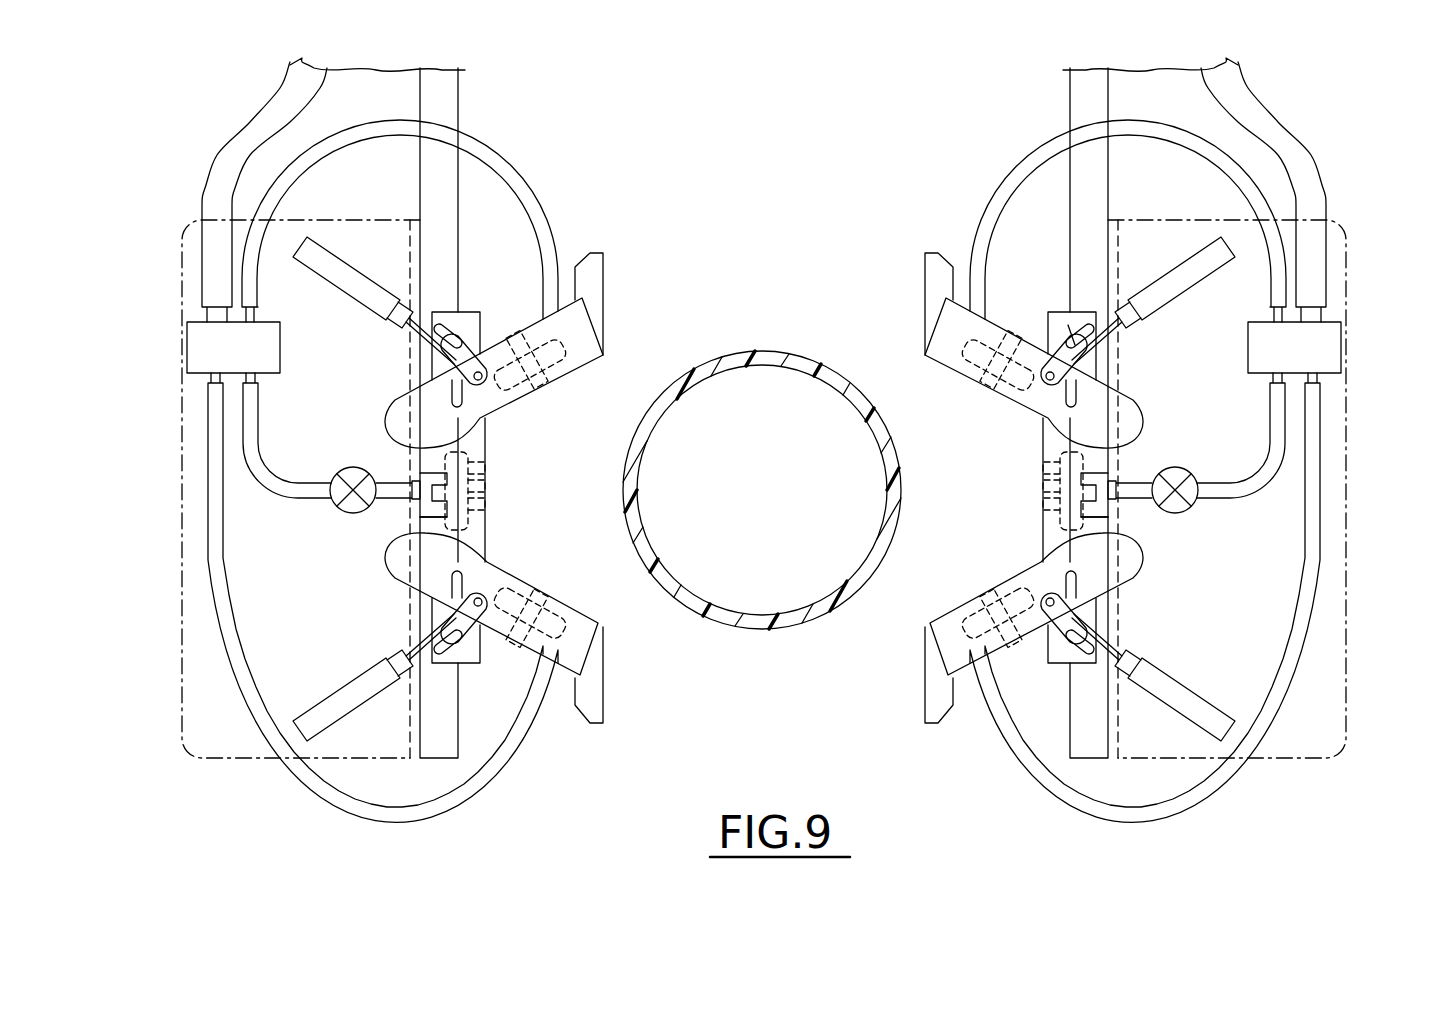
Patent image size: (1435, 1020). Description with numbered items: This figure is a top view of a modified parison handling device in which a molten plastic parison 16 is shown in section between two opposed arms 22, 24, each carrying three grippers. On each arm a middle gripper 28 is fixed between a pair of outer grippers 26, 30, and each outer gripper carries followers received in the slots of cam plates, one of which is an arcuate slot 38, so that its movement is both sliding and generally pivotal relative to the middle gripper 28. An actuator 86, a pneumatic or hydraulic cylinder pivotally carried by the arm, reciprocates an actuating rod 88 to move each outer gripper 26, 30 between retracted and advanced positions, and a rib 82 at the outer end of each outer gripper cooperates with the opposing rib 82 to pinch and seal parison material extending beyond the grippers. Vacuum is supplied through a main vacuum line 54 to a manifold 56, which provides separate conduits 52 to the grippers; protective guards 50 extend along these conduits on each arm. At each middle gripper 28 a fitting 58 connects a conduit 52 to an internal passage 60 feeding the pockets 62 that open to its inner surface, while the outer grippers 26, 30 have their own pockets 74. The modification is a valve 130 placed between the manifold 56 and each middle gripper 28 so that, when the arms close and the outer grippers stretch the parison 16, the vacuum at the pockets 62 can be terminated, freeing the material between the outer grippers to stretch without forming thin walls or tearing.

The parison 16 is at (767, 350).
The arm 22 is at (1077, 108).
The arm 24 is at (450, 105).
The outer gripper 26 is at (598, 335).
The middle gripper 28 is at (478, 437).
The outer gripper 30 is at (593, 628).
The arcuate slot 38 is at (1070, 337).
The protective guard 50 is at (180, 530).
The conduit 52 is at (267, 207).
The main vacuum line 54 is at (223, 153).
The manifold 56 is at (1330, 340).
The fitting 58 is at (427, 473).
The internal passage 60 is at (427, 517).
The pocket 62 is at (488, 500).
The pocket 74 is at (528, 397).
The rib 82 is at (597, 262).
The actuator 86 is at (345, 272).
The actuating rod 88 is at (412, 640).
The valve 130 is at (348, 467).